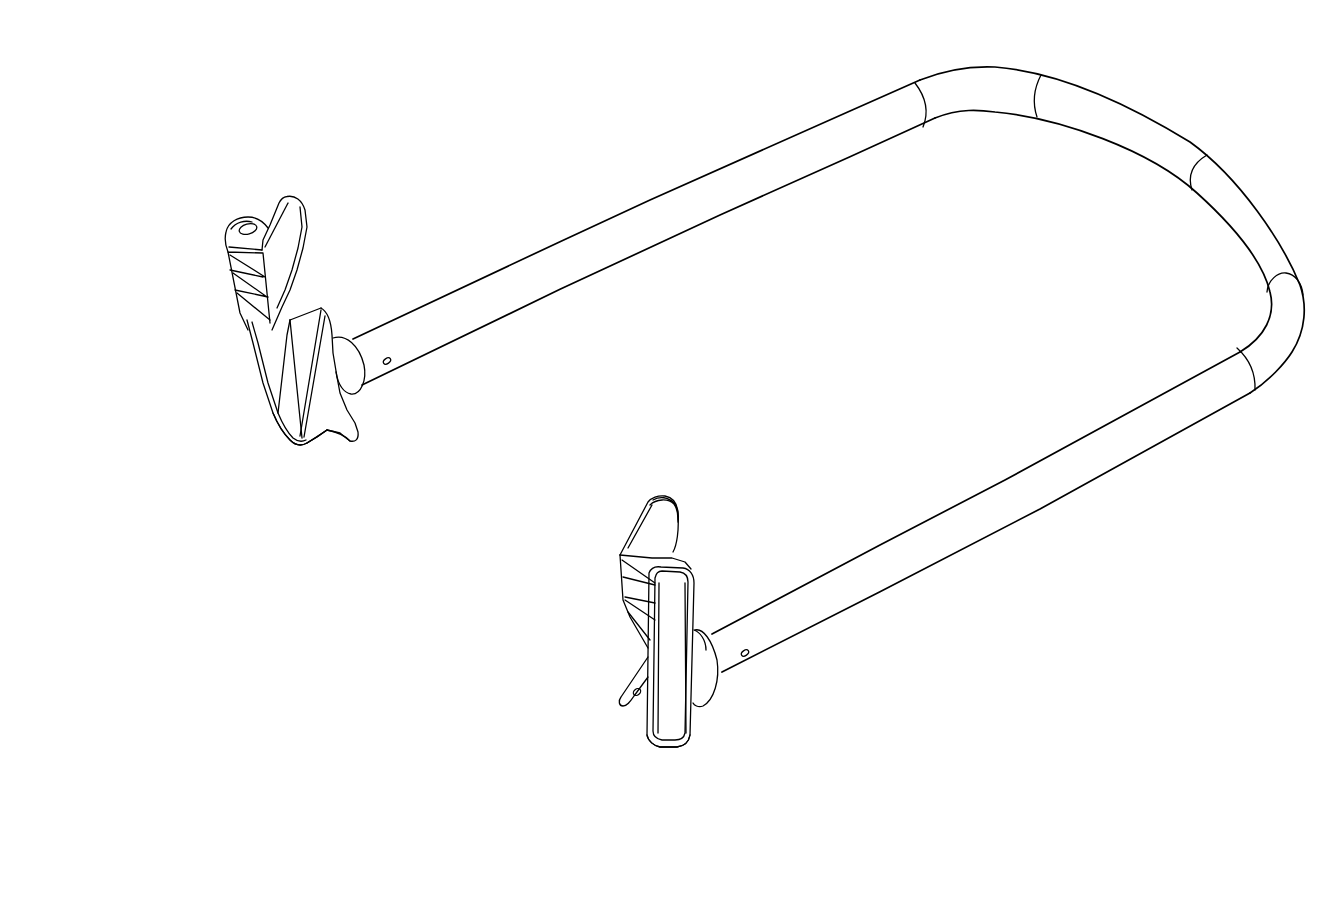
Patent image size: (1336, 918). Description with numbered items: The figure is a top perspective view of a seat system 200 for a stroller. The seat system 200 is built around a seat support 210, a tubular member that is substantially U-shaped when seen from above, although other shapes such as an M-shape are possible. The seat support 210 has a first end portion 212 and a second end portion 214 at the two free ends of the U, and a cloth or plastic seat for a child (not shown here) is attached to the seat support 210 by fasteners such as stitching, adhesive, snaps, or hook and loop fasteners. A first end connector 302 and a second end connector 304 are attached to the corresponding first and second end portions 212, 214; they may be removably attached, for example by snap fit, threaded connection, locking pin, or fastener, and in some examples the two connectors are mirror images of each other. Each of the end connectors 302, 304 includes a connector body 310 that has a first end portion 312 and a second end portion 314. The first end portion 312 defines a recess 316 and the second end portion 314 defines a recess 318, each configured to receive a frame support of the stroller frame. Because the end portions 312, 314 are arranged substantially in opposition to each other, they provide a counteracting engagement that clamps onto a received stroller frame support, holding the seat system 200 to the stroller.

The seat system 200 is at (447, 56).
The seat support 210 is at (763, 152).
The first end portion 212 is at (742, 599).
The second end portion 214 is at (380, 305).
The first end connector 302 is at (703, 703).
The second end connector 304 is at (357, 398).
The connector body 310 is at (253, 357).
The first end portion 312 is at (317, 195).
The second end portion 314 is at (287, 456).
The recess 316 is at (263, 211).
The recess 318 is at (286, 398).